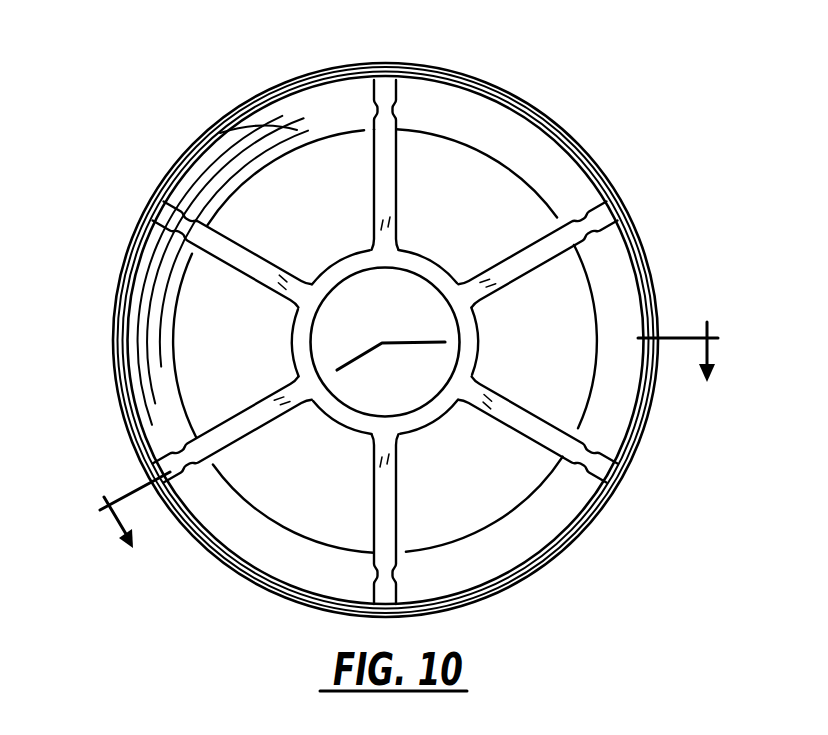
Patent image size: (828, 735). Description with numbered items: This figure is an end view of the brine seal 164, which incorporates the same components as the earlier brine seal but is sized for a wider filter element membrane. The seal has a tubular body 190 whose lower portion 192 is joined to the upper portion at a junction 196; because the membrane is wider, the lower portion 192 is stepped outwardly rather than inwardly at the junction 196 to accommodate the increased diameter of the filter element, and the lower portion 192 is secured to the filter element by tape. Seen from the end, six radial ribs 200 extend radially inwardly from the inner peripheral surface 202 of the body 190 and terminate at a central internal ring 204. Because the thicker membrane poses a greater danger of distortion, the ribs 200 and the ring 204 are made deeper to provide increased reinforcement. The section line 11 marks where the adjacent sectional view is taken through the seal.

The brine seal 164 is at (604, 168).
The tubular body 190 is at (106, 304).
The lower portion 192 is at (527, 105).
The junction 196 is at (272, 133).
The radial ribs 200 is at (395, 160).
The inner peripheral surface 202 is at (527, 182).
The internal ring 204 is at (336, 262).
The section line 11- 11 is at (421, 448).